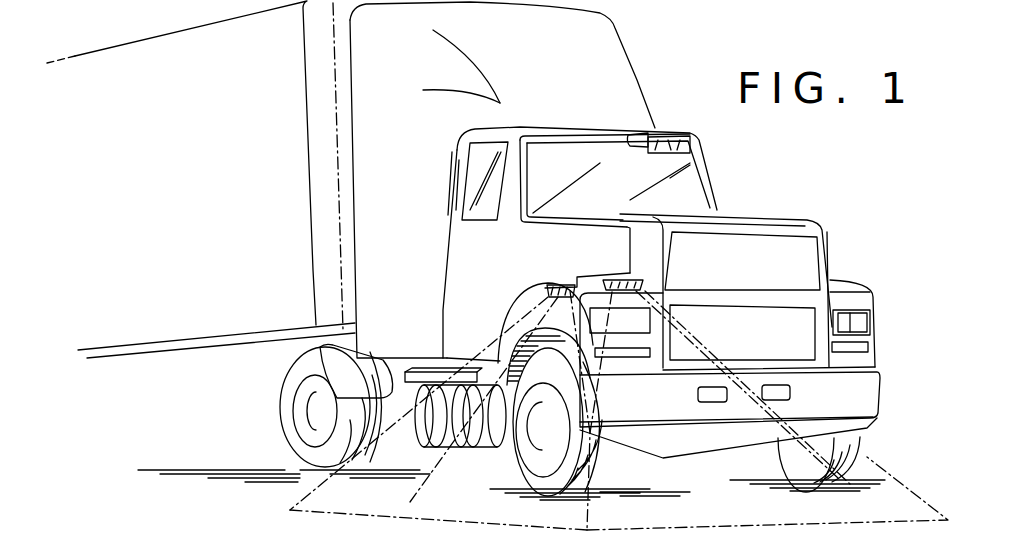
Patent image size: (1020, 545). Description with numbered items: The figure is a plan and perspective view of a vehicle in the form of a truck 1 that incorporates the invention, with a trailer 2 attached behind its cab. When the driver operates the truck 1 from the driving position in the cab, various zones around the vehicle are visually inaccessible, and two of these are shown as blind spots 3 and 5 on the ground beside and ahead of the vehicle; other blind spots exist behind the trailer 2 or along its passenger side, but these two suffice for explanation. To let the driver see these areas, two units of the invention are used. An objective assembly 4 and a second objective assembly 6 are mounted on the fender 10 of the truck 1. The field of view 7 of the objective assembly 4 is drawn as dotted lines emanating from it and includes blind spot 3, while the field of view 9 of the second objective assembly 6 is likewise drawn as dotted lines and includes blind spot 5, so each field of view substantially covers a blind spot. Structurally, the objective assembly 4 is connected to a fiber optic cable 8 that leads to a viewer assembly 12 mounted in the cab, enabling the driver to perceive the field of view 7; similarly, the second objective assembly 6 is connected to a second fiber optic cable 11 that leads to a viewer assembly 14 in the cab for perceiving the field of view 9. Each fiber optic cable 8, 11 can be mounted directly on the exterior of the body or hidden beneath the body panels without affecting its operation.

The truck 1 is at (822, 212).
The trailer 2 is at (116, 49).
The blind spot 3 is at (414, 410).
The objective assembly 4 is at (547, 281).
The blind spot 5 is at (767, 410).
The second objective assembly 6 is at (640, 278).
The field of view 7 is at (437, 455).
The fiber optic cable 8 is at (587, 273).
The field of view 9 is at (753, 390).
The fender 10 is at (513, 300).
The second fiber optic cable 11 is at (627, 250).
The viewer assembly 12 is at (640, 133).
The viewer assembly 14 is at (685, 138).